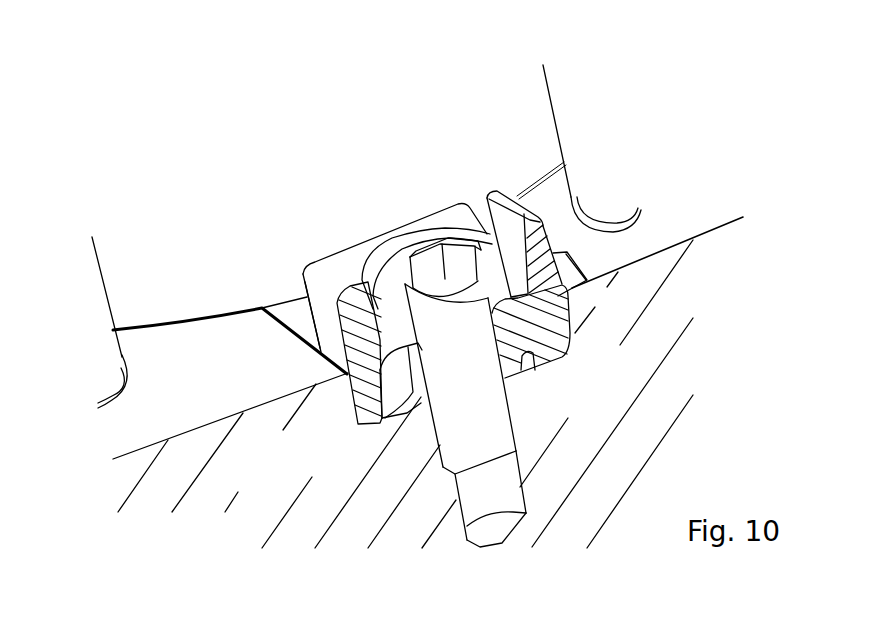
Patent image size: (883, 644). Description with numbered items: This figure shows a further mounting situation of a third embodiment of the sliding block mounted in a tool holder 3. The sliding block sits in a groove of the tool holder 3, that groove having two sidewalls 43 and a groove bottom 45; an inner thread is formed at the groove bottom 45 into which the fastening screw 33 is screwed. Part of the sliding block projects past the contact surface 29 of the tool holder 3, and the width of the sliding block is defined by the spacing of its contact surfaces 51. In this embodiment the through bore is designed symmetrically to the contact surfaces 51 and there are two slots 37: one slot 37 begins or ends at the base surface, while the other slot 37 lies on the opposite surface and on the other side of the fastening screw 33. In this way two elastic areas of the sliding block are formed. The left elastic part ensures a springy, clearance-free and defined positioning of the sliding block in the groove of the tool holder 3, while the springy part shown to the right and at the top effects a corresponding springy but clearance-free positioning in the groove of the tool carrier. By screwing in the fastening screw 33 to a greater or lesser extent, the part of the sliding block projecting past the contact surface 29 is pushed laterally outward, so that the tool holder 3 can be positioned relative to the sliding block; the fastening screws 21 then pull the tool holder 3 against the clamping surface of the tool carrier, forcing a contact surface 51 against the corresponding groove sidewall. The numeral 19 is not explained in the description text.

The tool holder 3 is at (649, 85).
The bolt 19 is at (418, 408).
The fastening screws 21 is at (98, 337).
The contact surface 29 is at (233, 382).
The fastening screw 33 is at (396, 290).
The slot 37 is at (493, 205).
The sidewalls 43 is at (366, 381).
The groove bottom 45 is at (534, 372).
The contact surfaces 51 is at (317, 315).